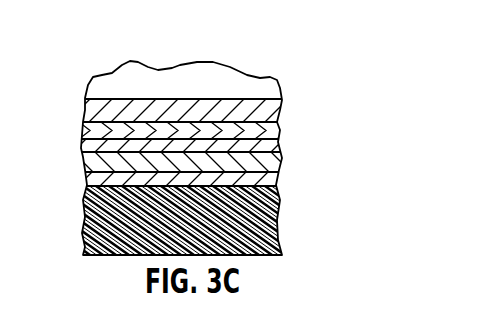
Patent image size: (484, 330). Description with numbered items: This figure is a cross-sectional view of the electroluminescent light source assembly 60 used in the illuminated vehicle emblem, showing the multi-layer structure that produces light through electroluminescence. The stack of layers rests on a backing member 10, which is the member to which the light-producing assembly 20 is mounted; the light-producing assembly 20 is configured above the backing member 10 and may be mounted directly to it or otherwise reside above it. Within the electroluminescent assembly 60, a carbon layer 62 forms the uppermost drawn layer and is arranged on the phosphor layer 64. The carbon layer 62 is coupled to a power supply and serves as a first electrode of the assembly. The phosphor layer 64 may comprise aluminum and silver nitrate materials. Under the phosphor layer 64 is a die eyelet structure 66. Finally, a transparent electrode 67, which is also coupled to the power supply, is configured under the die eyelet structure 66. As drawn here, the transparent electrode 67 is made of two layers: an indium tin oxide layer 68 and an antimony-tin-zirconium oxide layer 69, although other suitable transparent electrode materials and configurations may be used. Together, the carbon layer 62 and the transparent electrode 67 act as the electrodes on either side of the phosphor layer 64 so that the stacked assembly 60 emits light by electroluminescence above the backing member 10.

The backing member 10 is at (280, 233).
The light-producing assembly 20 is at (67, 231).
The electroluminescent light source assembly 60 is at (321, 100).
The carbon layer 62 is at (281, 116).
The phosphor layer 64 is at (281, 125).
The die eyelet structure 66 is at (281, 143).
The transparent electrode 67 is at (81, 156).
The indium tin oxide layer 68 is at (281, 160).
The antimony-tin-zirconium oxide layer 69 is at (281, 181).